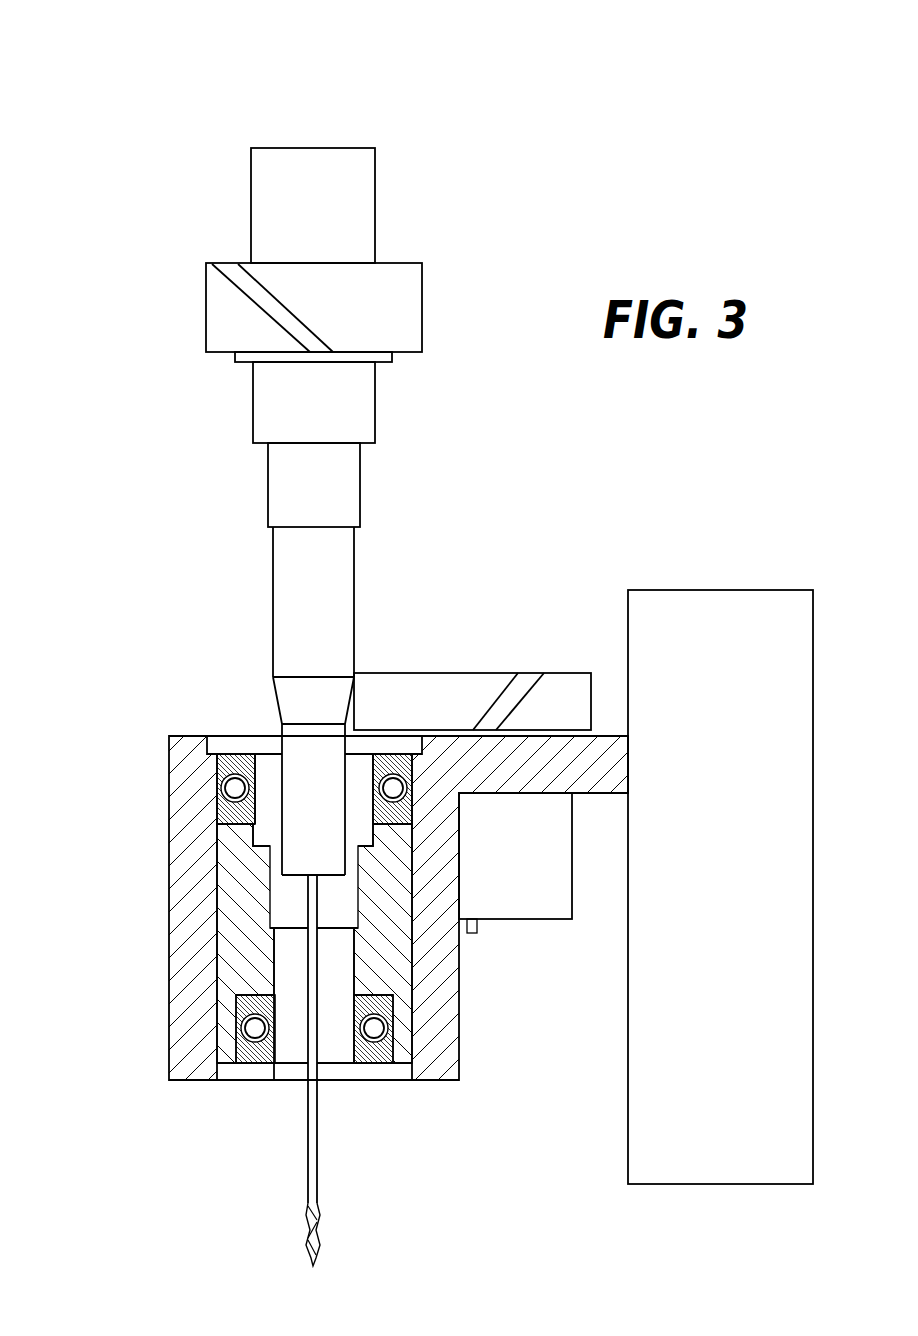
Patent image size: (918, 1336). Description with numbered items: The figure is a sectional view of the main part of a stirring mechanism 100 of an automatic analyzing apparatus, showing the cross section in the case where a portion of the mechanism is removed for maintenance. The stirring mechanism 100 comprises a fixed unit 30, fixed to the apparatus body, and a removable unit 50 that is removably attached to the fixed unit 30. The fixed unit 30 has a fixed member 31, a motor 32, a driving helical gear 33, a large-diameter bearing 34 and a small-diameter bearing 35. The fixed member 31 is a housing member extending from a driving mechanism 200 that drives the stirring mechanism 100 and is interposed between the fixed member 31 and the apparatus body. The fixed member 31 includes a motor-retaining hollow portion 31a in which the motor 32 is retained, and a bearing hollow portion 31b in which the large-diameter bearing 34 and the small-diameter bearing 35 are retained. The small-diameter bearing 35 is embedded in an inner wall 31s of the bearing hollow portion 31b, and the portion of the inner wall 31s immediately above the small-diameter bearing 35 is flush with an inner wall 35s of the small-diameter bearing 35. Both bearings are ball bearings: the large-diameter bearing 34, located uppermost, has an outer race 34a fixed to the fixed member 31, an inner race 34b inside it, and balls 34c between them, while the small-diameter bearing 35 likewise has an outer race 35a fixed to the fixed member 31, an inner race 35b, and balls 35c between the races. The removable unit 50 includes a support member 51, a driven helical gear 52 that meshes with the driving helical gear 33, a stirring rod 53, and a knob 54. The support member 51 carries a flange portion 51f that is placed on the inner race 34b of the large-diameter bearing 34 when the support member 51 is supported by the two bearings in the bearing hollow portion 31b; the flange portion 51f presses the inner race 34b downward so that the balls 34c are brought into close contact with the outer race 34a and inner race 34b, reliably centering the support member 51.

The stirring mechanism 100 is at (232, 23).
The driving mechanism 200 is at (733, 590).
The removable unit 50 is at (455, 181).
The knob 54 is at (249, 235).
The driven helical gear 52 is at (206, 289).
The flange portion 51f is at (236, 362).
The support member 51 is at (285, 587).
The stirring rod 53 is at (307, 1178).
The fixed unit 30 is at (524, 1031).
The driving helical gear 33 is at (556, 673).
The fixed member 31 is at (612, 735).
The motor-retaining hollow portion 31a is at (573, 744).
The inner wall 31s is at (288, 968).
The bearing hollow portion 31b is at (291, 1063).
The motor 32 is at (538, 920).
The large-diameter bearing 34 is at (72, 718).
The outer race 34a is at (216, 808).
The inner race 34b is at (218, 762).
The balls 34c is at (214, 790).
The small-diameter bearing 35 is at (503, 1088).
The outer race 35a is at (410, 1048).
The inner race 35b is at (375, 1062).
The balls 35c is at (388, 1058).
The inner wall 35s is at (287, 1025).